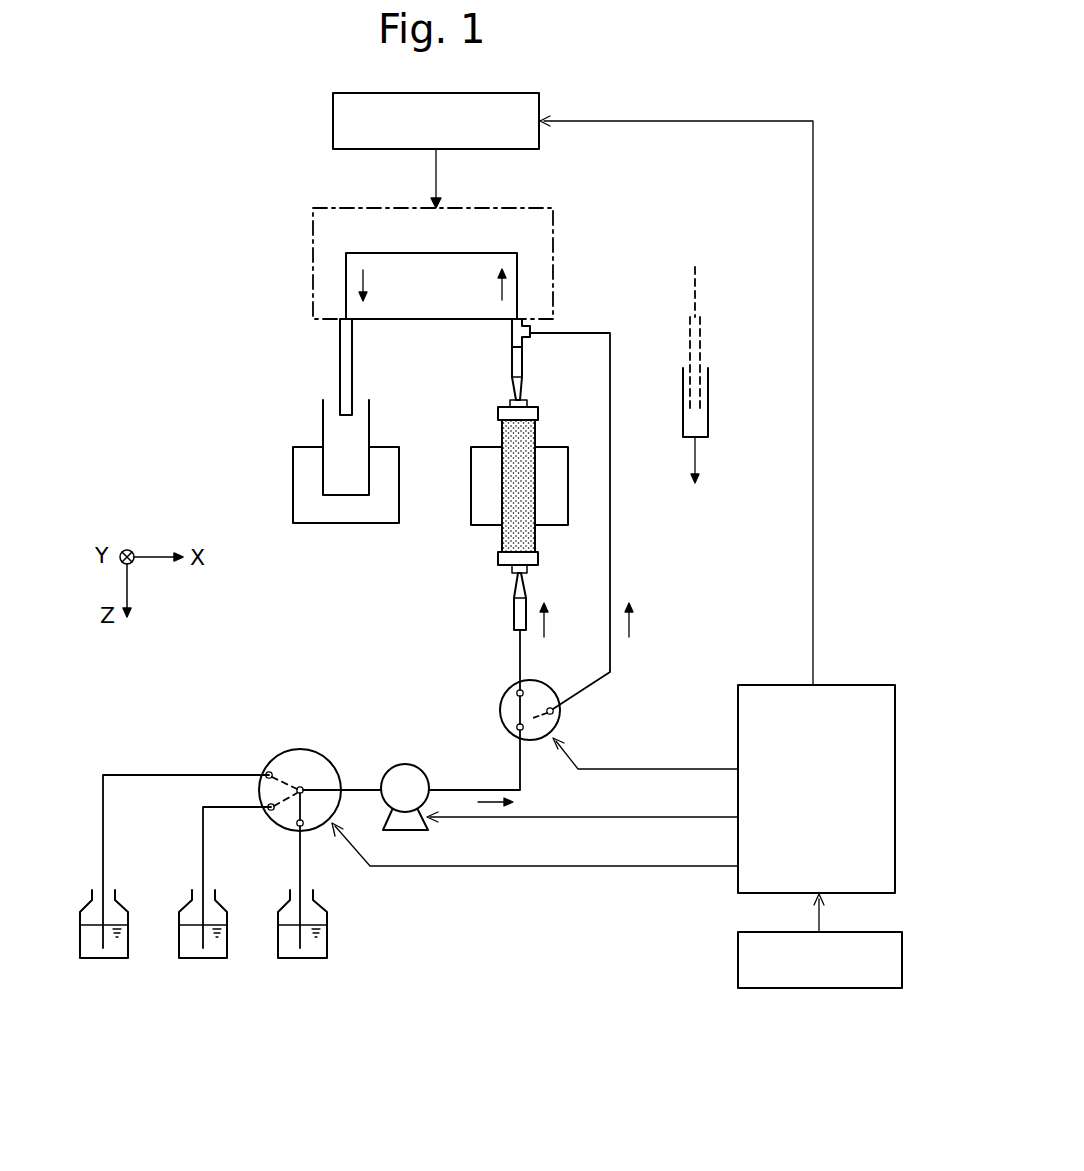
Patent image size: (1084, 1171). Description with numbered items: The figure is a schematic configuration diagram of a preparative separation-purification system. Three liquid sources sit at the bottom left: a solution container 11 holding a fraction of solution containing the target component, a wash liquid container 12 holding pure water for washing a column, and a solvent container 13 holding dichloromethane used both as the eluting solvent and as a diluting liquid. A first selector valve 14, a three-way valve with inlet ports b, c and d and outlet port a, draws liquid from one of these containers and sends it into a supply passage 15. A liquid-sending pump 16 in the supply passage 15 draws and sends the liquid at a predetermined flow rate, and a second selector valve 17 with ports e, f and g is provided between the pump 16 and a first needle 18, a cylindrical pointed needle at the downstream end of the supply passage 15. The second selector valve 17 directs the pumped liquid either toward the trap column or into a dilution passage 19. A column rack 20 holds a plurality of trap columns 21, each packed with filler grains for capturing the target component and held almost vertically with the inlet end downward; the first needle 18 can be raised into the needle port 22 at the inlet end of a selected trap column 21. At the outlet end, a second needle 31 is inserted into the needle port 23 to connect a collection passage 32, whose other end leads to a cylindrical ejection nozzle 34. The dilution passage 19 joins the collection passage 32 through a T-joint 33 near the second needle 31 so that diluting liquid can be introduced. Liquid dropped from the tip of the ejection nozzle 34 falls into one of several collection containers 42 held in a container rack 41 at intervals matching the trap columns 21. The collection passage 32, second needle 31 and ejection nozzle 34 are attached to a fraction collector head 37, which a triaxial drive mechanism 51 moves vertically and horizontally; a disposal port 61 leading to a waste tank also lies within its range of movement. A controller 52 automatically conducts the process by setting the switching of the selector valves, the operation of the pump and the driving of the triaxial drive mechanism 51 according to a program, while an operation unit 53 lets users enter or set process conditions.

The solution container 11 is at (283, 905).
The wash liquid container 12 is at (183, 905).
The solvent container 13 is at (84, 905).
The first selector valve 14 is at (302, 749).
The supply passage 15 is at (467, 786).
The liquid-sending pump 16 is at (394, 767).
The second selector valve 17 is at (556, 732).
The first needle 18 is at (514, 613).
The dilution passage 19 is at (610, 567).
The column rack 20 is at (471, 505).
The trap column 21 is at (502, 465).
The needle port 22 is at (512, 571).
The needle port 23 is at (510, 401).
The second needle 31 is at (512, 364).
The collection passage 32 is at (481, 253).
The T-joint 33 is at (512, 336).
The ejection nozzle 34 is at (340, 384).
The fraction collector head 37 is at (553, 262).
The container rack 41 is at (293, 508).
The collection container 42 is at (323, 430).
The triaxial drive mechanism 51 is at (333, 118).
The controller 52 is at (895, 797).
The operation unit 53 is at (902, 962).
The disposal port 61 is at (708, 393).